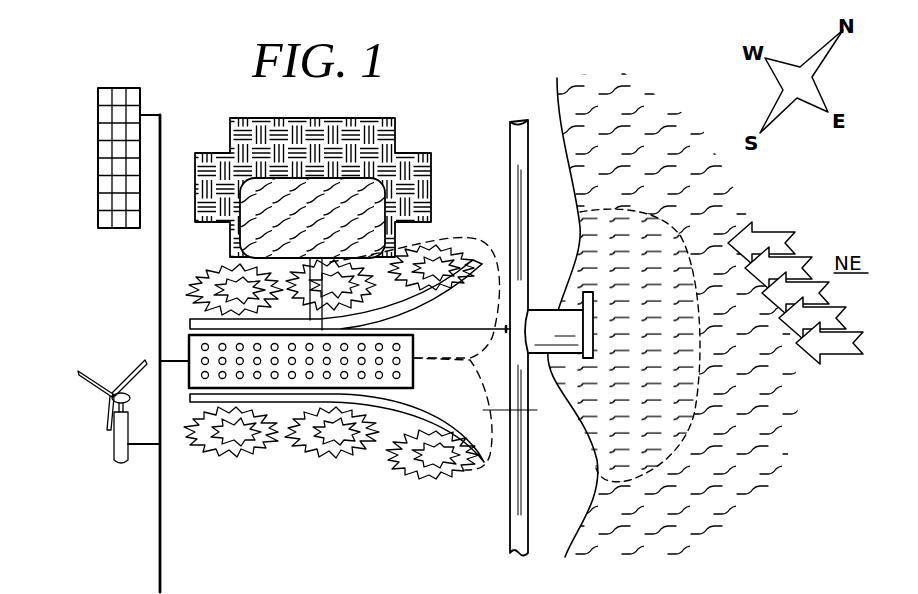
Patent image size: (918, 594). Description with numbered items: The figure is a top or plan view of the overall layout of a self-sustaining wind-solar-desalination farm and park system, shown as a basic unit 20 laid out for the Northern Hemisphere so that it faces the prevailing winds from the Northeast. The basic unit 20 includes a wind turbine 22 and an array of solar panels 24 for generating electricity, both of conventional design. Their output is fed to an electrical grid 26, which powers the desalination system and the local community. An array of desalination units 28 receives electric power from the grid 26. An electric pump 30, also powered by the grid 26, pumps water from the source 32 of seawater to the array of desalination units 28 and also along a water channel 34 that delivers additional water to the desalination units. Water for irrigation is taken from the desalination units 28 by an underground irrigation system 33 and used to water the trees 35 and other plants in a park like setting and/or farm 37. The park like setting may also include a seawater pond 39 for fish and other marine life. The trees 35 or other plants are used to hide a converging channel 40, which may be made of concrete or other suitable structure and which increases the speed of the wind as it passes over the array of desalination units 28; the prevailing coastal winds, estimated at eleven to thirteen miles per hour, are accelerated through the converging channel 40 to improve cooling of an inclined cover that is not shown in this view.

The basic unit 20 is at (128, 72).
The wind turbine 22 is at (113, 445).
The array of solar panels 24 is at (98, 160).
The electrical grid 26 is at (160, 552).
The array of desalination units 28 is at (393, 366).
The electric pump 30 is at (535, 325).
The source of seawater 32 is at (688, 380).
The underground irrigation system 33 is at (537, 407).
The water channel 34 is at (513, 533).
The trees 35 is at (190, 286).
The farm 37 is at (245, 133).
The seawater pond 39 is at (365, 192).
The converging channel 40 is at (480, 250).